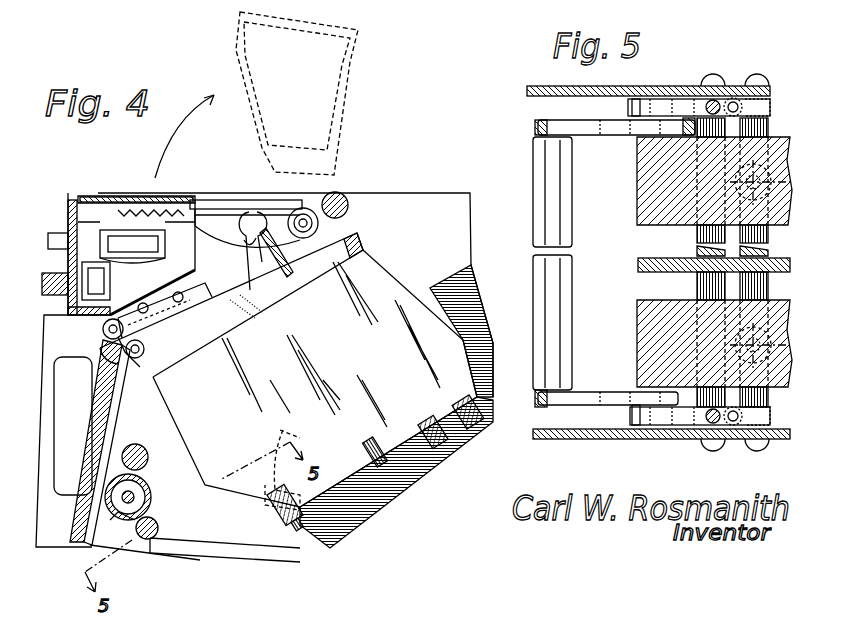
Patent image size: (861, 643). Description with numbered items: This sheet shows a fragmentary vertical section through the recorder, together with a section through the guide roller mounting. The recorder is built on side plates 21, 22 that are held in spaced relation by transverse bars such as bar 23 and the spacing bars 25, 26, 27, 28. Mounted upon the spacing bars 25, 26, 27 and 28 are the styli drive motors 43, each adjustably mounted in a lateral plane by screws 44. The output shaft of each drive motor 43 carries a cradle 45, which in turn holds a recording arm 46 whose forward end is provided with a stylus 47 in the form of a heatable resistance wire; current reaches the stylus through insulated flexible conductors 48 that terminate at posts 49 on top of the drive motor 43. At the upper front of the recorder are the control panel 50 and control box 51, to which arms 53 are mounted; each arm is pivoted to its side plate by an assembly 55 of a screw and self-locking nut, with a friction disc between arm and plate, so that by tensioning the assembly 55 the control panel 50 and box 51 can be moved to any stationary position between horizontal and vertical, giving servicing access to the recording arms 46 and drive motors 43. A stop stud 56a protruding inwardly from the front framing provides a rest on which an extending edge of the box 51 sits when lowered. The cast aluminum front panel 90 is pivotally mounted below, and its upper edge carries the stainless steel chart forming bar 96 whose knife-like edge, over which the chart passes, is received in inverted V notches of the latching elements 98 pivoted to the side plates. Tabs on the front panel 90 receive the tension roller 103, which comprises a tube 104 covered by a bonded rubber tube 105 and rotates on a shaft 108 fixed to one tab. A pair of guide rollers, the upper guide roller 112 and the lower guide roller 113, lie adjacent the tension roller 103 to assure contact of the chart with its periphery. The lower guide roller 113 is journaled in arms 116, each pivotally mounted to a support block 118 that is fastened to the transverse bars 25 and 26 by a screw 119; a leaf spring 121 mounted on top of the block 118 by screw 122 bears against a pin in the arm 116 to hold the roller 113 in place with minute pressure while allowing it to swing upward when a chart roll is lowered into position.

In FIG. 4, the side plate 21 is at (410, 213).
In FIG. 5, the side plate 21 is at (560, 86).
In FIG. 5, the side plate 22 is at (585, 440).
In FIG. 4, the transverse bar 23 is at (312, 212).
In FIG. 4, the transverse bar 25 is at (280, 557).
In FIG. 5, the transverse bar 25 is at (697, 240).
In FIG. 4, the transverse bar 26 is at (322, 543).
In FIG. 5, the transverse bar 26 is at (770, 285).
In FIG. 4, the transverse bar 27 is at (436, 448).
In FIG. 4, the transverse bar 28 is at (470, 422).
In FIG. 4, the styli drive motor 43 is at (428, 305).
In FIG. 5, the styli drive motor 43 is at (643, 200).
In FIG. 4, the screw 44 is at (300, 555).
In FIG. 5, the screw 44 is at (771, 264).
In FIG. 4, the cradle 45 is at (258, 288).
In FIG. 4, the recording arm 46 is at (160, 322).
In FIG. 4, the stylus 47 is at (112, 368).
In FIG. 4, the insulated flexible conductor 48 is at (247, 225).
In FIG. 4, the post 49 is at (268, 228).
In FIG. 4, the control panel 50 is at (65, 218).
In FIG. 4, the control box 51 is at (132, 197).
In FIG. 4, the arm 53 is at (218, 200).
In FIG. 4, the assembly 55 is at (334, 195).
In FIG. 4, the housing cover 56a is at (84, 196).
In FIG. 4, the front panel 90 is at (68, 515).
In FIG. 4, the chart forming bar 96 is at (105, 390).
In FIG. 4, the latching element 98 is at (99, 340).
In FIG. 4, the tension roller 103 is at (104, 530).
In FIG. 4, the tube 104 is at (105, 492).
In FIG. 4, the rubber tube 105 is at (150, 480).
In FIG. 4, the shaft 108 is at (135, 495).
In FIG. 4, the upper guide roller 112 is at (148, 455).
In FIG. 4, the lower guide roller 113 is at (143, 540).
In FIG. 5, the lower guide roller 113 is at (540, 150).
In FIG. 4, the arm 116 is at (195, 552).
In FIG. 5, the arm 116 is at (628, 133).
In FIG. 4, the support block 118 is at (270, 440).
In FIG. 5, the support block 118 is at (770, 110).
In FIG. 5, the screw 119 is at (628, 108).
In FIG. 5, the leaf spring 121 is at (660, 103).
In FIG. 5, the screw 122 is at (715, 100).